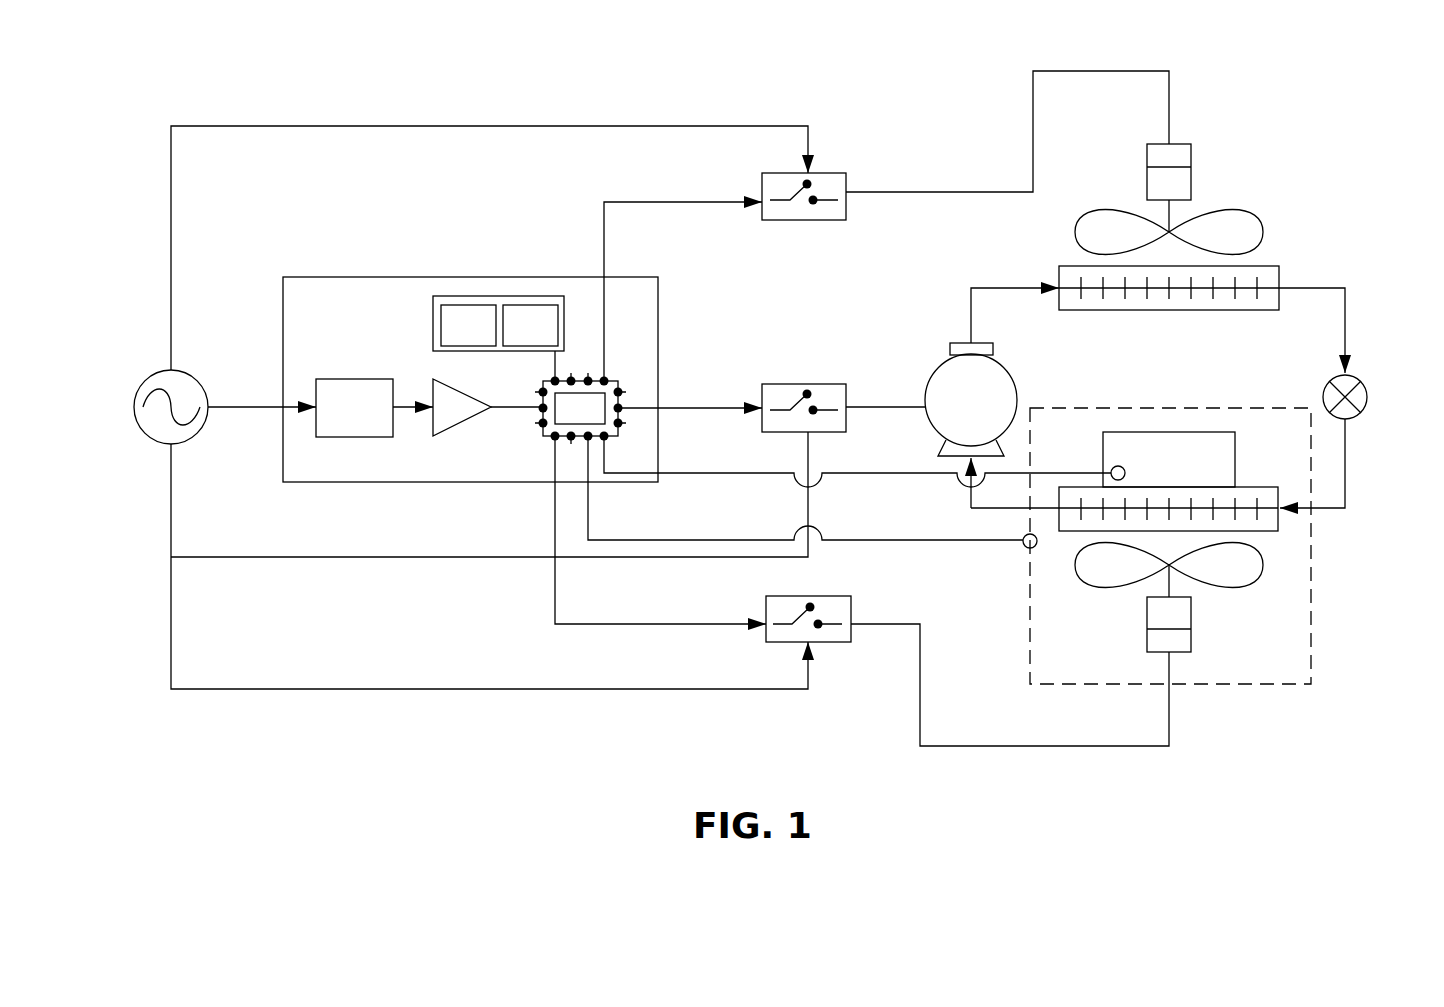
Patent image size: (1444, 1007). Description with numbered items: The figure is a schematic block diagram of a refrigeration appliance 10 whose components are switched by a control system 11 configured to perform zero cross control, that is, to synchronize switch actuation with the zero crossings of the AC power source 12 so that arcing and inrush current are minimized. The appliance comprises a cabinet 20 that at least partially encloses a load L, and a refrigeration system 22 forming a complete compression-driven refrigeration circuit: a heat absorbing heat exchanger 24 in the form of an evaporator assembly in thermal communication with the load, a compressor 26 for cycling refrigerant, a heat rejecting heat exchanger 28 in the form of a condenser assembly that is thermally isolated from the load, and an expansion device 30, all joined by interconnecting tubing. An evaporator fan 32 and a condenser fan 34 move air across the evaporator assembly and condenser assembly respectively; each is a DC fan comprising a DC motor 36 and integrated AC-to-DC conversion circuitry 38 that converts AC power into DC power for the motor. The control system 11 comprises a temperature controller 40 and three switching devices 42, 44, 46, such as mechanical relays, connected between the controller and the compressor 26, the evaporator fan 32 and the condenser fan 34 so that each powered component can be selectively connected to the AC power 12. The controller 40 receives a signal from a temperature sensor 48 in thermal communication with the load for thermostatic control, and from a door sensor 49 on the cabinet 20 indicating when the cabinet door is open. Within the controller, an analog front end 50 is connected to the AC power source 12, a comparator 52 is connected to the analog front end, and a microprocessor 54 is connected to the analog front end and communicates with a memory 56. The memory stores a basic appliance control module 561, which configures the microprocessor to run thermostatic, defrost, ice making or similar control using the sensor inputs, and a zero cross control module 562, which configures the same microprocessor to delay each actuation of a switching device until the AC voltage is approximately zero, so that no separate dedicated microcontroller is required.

The appliance 10 is at (300, 762).
The control system 11 is at (330, 117).
The AC power source 12 is at (146, 380).
The cabinet 20 is at (1172, 586).
The refrigeration system 22 is at (1248, 288).
The heat absorbing heat exchanger 24 is at (1248, 486).
The compressor 26 is at (992, 398).
The heat rejecting heat exchanger 28 is at (1279, 278).
The expansion device 30 is at (1367, 394).
The evaporator fan 32 is at (1185, 665).
The condenser fan 34 is at (1216, 108).
The DC motor 36 is at (1191, 187).
The AC-to-DC conversion circuitry 38 is at (1147, 150).
The temperature controller 40 is at (470, 348).
The switching device 42 is at (795, 382).
The switching device 44 is at (848, 645).
The switching device 46 is at (810, 224).
The temperature sensor 48 is at (1113, 467).
The door sensor 49 is at (1025, 548).
The analog front end 50 is at (374, 408).
The comparator 52 is at (453, 434).
The microprocessor 54 is at (580, 408).
The memory 56 is at (498, 297).
The basic appliance control module 561 is at (468, 325).
The zero cross control module 562 is at (489, 295).